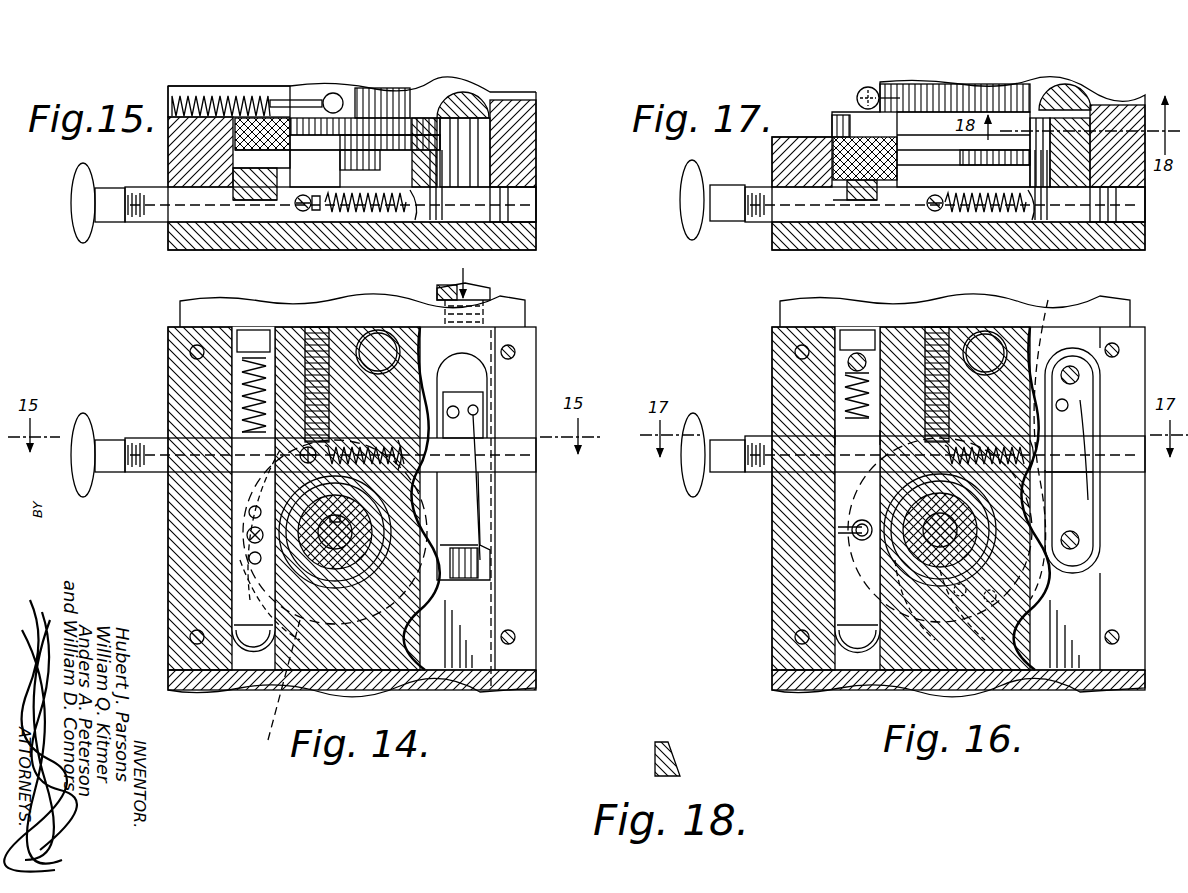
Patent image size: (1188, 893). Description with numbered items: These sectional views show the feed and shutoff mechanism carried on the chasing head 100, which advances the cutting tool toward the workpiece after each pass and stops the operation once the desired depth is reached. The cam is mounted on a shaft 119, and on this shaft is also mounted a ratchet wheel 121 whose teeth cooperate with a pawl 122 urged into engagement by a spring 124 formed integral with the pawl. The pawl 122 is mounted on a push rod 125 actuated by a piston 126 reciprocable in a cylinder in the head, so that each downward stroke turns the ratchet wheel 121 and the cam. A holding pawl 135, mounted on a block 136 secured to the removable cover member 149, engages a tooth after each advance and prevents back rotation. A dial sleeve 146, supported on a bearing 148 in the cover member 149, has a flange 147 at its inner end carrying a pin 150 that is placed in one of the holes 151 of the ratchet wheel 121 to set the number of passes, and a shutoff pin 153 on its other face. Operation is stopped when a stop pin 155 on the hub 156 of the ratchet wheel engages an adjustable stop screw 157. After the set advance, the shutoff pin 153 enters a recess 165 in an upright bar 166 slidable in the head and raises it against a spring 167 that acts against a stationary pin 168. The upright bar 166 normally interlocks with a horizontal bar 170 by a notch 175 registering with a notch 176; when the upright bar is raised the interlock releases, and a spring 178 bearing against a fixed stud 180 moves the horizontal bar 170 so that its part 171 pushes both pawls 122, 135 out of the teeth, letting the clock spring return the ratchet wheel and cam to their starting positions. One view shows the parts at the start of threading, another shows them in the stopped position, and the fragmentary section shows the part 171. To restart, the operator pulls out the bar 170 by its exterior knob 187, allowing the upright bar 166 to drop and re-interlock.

In FIG. 15, the chasing head 100 is at (152, 255).
In FIG. 17, the chasing head 100 is at (780, 100).
In FIG. 14, the chasing head 100 is at (160, 345).
In FIG. 16, the chasing head 100 is at (770, 318).
In FIG. 14, the shaft 119 is at (420, 580).
In FIG. 16, the shaft 119 is at (1010, 580).
In FIG. 15, the ratchet wheel 121 is at (307, 135).
In FIG. 17, the ratchet wheel 121 is at (836, 130).
In FIG. 14, the ratchet wheel 121 is at (460, 545).
In FIG. 16, the ratchet wheel 121 is at (1010, 570).
In FIG. 15, the pawl 122 is at (536, 127).
In FIG. 17, the pawl 122 is at (1095, 105).
In FIG. 15, the spring 124 is at (500, 110).
In FIG. 17, the spring 124 is at (1135, 188).
In FIG. 14, the spring 124 is at (500, 528).
In FIG. 16, the spring 124 is at (1090, 488).
In FIG. 15, the push rod 125 is at (470, 100).
In FIG. 17, the push rod 125 is at (1075, 88).
In FIG. 14, the push rod 125 is at (470, 375).
In FIG. 16, the push rod 125 is at (985, 353).
In FIG. 14, the piston 126 is at (470, 285).
In FIG. 15, the holding pawl 135 is at (490, 147).
In FIG. 17, the holding pawl 135 is at (1060, 170).
In FIG. 14, the holding pawl 135 is at (470, 490).
In FIG. 16, the holding pawl 135 is at (1085, 532).
In FIG. 15, the block 136 is at (500, 160).
In FIG. 17, the block 136 is at (1056, 222).
In FIG. 16, the block 136 is at (1085, 375).
In FIG. 15, the sleeve 146 is at (318, 212).
In FIG. 17, the sleeve 146 is at (955, 98).
In FIG. 14, the sleeve 146 is at (250, 556).
In FIG. 16, the sleeve 146 is at (955, 630).
In FIG. 15, the flange 147 is at (305, 155).
In FIG. 17, the flange 147 is at (865, 202).
In FIG. 14, the flange 147 is at (470, 572).
In FIG. 16, the flange 147 is at (1060, 562).
In FIG. 14, the bearing 148 is at (280, 580).
In FIG. 16, the bearing 148 is at (920, 630).
In FIG. 15, the cover member 149 is at (536, 247).
In FIG. 17, the cover member 149 is at (800, 250).
In FIG. 14, the pin 150 is at (322, 590).
In FIG. 16, the pin 150 is at (1030, 500).
In FIG. 14, the holes 151 is at (250, 514).
In FIG. 16, the holes 151 is at (1000, 610).
In FIG. 15, the shutoff pin 153 is at (380, 214).
In FIG. 17, the shutoff pin 153 is at (918, 165).
In FIG. 14, the shutoff pin 153 is at (490, 516).
In FIG. 16, the shutoff pin 153 is at (855, 535).
In FIG. 15, the stop pin 155 is at (315, 168).
In FIG. 17, the stop pin 155 is at (856, 90).
In FIG. 15, the hub 156 is at (328, 102).
In FIG. 17, the hub 156 is at (856, 99).
In FIG. 15, the stop screw 157 is at (170, 97).
In FIG. 15, the recess 165 is at (252, 200).
In FIG. 17, the recess 165 is at (835, 152).
In FIG. 14, the recess 165 is at (248, 535).
In FIG. 16, the recess 165 is at (840, 530).
In FIG. 15, the upright bar 166 is at (250, 212).
In FIG. 17, the upright bar 166 is at (843, 222).
In FIG. 14, the upright bar 166 is at (250, 600).
In FIG. 16, the upright bar 166 is at (855, 612).
In FIG. 14, the spring 167 is at (240, 392).
In FIG. 16, the spring 167 is at (845, 390).
In FIG. 14, the stationary pin 168 is at (251, 330).
In FIG. 16, the stationary pin 168 is at (848, 362).
In FIG. 15, the horizontal bar 170 is at (526, 207).
In FIG. 17, the horizontal bar 170 is at (1150, 230).
In FIG. 14, the horizontal bar 170 is at (527, 424).
In FIG. 16, the horizontal bar 170 is at (1125, 436).
In FIG. 15, the part 171 is at (428, 195).
In FIG. 17, the part 171 is at (1040, 222).
In FIG. 14, the part 171 is at (420, 452).
In FIG. 16, the part 171 is at (1040, 448).
In FIG. 18, the part 171 is at (670, 757).
In FIG. 16, the notch 175 is at (835, 437).
In FIG. 15, the notch 176 is at (300, 222).
In FIG. 17, the notch 176 is at (870, 222).
In FIG. 14, the notch 176 is at (240, 456).
In FIG. 16, the notch 176 is at (850, 452).
In FIG. 15, the spring 178 is at (416, 218).
In FIG. 17, the spring 178 is at (1020, 214).
In FIG. 14, the spring 178 is at (405, 360).
In FIG. 16, the spring 178 is at (1048, 340).
In FIG. 15, the fixed stud 180 is at (362, 214).
In FIG. 17, the fixed stud 180 is at (952, 214).
In FIG. 14, the fixed stud 180 is at (300, 345).
In FIG. 16, the fixed stud 180 is at (925, 360).
In FIG. 15, the knob 187 is at (80, 180).
In FIG. 17, the knob 187 is at (690, 180).
In FIG. 14, the knob 187 is at (90, 420).
In FIG. 16, the knob 187 is at (700, 490).